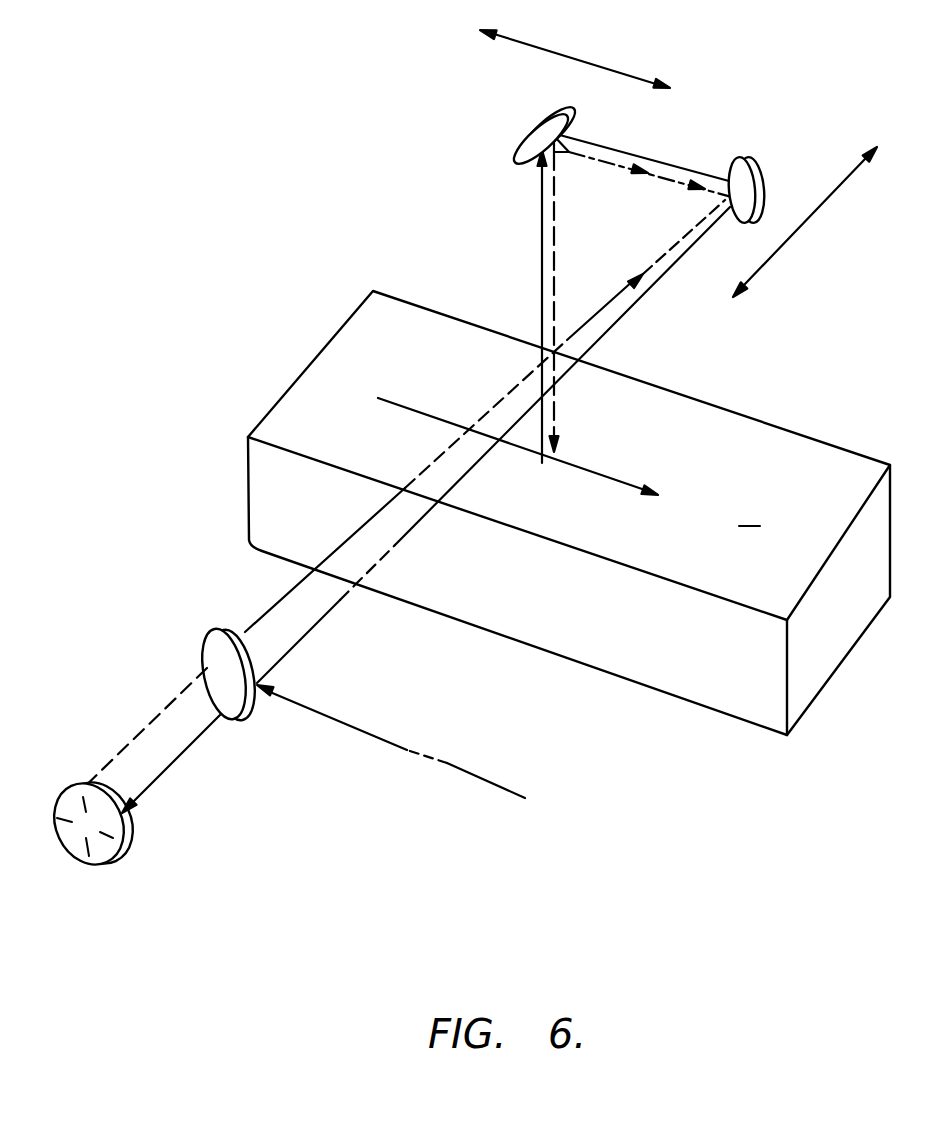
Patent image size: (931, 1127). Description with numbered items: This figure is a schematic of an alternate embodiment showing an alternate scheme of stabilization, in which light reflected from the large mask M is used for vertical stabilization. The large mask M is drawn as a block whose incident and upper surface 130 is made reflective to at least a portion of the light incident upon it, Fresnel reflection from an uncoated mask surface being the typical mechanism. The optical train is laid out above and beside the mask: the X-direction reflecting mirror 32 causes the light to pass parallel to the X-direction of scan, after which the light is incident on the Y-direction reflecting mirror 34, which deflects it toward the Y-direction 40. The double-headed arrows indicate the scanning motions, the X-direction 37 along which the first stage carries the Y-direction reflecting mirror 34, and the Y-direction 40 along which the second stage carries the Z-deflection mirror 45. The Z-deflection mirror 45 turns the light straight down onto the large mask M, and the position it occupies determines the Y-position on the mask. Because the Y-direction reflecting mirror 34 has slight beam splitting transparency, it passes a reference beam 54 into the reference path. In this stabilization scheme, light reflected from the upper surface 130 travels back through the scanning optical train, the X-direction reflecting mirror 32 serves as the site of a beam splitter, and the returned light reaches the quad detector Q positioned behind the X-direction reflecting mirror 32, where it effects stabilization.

The incident and upper surface 130 is at (358, 362).
The large mask M is at (749, 508).
The Z-deflection mirror 45 is at (530, 120).
The Y-direction reflecting mirror 34 is at (768, 177).
The X-direction 37 is at (793, 233).
The Y-direction 40 is at (562, 53).
The X-direction reflecting mirror 32 is at (207, 640).
The reference beam 54 is at (182, 760).
The quad detector Q is at (58, 838).